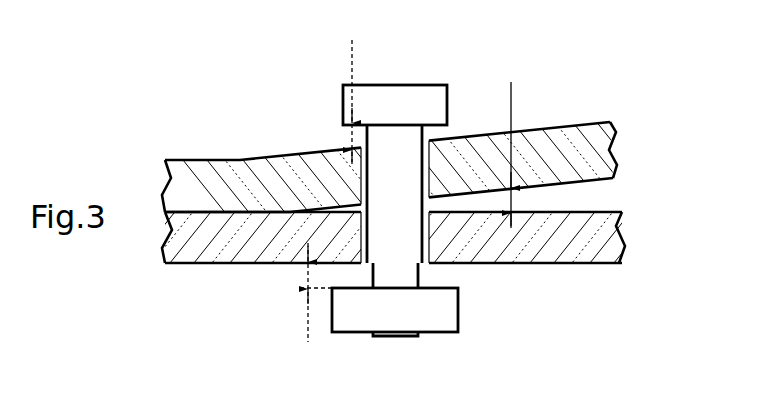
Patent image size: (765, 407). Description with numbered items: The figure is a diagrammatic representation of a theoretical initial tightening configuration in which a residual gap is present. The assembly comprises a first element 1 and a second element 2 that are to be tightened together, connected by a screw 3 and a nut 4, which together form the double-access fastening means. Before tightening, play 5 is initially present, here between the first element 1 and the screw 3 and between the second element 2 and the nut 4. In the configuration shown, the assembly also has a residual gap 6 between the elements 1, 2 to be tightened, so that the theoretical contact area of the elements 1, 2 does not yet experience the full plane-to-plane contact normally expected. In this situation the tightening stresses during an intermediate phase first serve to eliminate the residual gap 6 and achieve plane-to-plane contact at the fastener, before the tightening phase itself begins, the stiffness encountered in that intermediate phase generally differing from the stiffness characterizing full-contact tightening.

The first element 1 is at (208, 183).
The second element 2 is at (210, 243).
The screw 3 is at (393, 100).
The nut 4 is at (388, 316).
The play 5 is at (321, 193).
The residual gap 6 is at (517, 155).